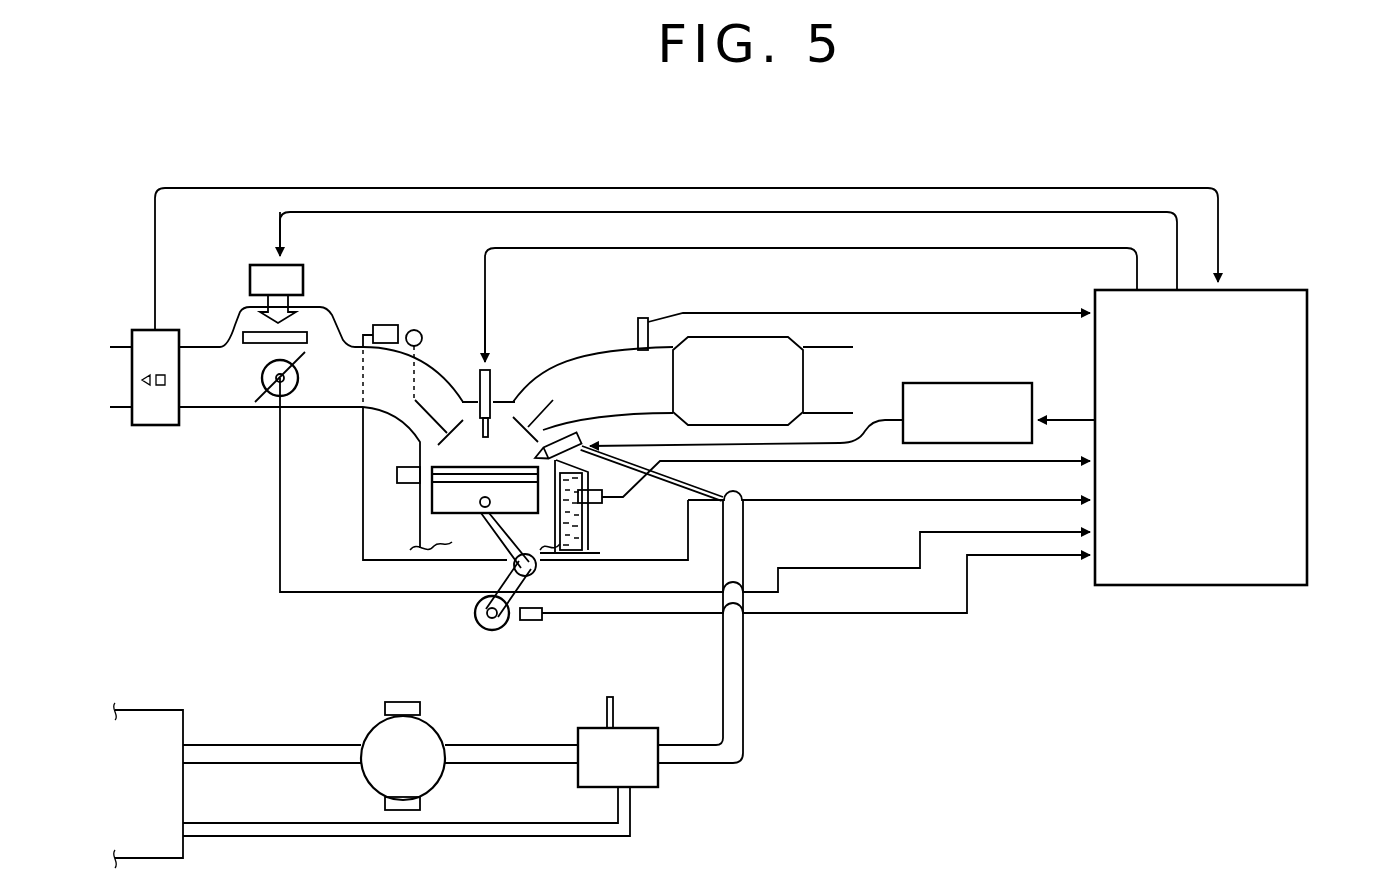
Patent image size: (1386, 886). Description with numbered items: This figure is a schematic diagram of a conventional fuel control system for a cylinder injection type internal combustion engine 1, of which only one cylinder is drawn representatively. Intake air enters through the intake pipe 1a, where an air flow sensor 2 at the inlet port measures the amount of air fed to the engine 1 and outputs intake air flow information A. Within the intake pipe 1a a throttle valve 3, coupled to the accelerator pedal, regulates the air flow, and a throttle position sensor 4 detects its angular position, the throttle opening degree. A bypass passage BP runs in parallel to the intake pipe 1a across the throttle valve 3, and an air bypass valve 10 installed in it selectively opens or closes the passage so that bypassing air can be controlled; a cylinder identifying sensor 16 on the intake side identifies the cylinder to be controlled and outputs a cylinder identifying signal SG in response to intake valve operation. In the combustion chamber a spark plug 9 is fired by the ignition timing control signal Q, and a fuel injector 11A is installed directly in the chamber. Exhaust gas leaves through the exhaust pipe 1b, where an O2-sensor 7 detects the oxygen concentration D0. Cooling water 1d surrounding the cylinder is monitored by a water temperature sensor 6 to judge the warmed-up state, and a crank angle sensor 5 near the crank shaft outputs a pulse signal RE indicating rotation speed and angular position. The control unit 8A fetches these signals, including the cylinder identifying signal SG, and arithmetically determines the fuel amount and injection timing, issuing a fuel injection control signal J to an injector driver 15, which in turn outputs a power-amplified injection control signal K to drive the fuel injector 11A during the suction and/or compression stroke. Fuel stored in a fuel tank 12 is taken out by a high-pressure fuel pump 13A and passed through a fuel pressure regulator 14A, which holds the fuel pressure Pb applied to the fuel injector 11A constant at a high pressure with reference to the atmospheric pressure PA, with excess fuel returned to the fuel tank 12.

The internal combustion engine 1 is at (593, 513).
The intake pipe 1a is at (447, 390).
The exhaust pipe 1b is at (555, 360).
The cooling water 1d is at (587, 545).
The air flow sensor 2 is at (150, 425).
The throttle valve 3 is at (260, 395).
The throttle position sensor 4 is at (298, 373).
The crank angle sensor 5 is at (541, 620).
The water temperature sensor 6 is at (605, 500).
The O2-sensor 7 is at (637, 333).
The control unit 8A is at (1307, 437).
The spark plug 9 is at (500, 366).
The air bypass valve 10 is at (250, 268).
The fuel injector 11A is at (575, 417).
The fuel tank 12 is at (185, 712).
The fuel pump 13A is at (432, 720).
The fuel pressure regulator 14A is at (650, 728).
The injector driver 15 is at (963, 382).
The cylinder identifying sensor 16 is at (400, 325).
The intake air flow information A is at (832, 188).
The bypass control signal B is at (343, 213).
The bypass passage BP is at (243, 310).
The oxygen concentration D0 is at (873, 313).
The ignition timing control signal Q is at (736, 250).
The injection control signal K is at (875, 432).
The fuel injection control signal J is at (1069, 414).
The cylinder identifying signal SG is at (903, 500).
The pulse signal RE is at (895, 613).
The atmospheric pressure PA is at (607, 705).
The fuel pressure Pb is at (745, 697).